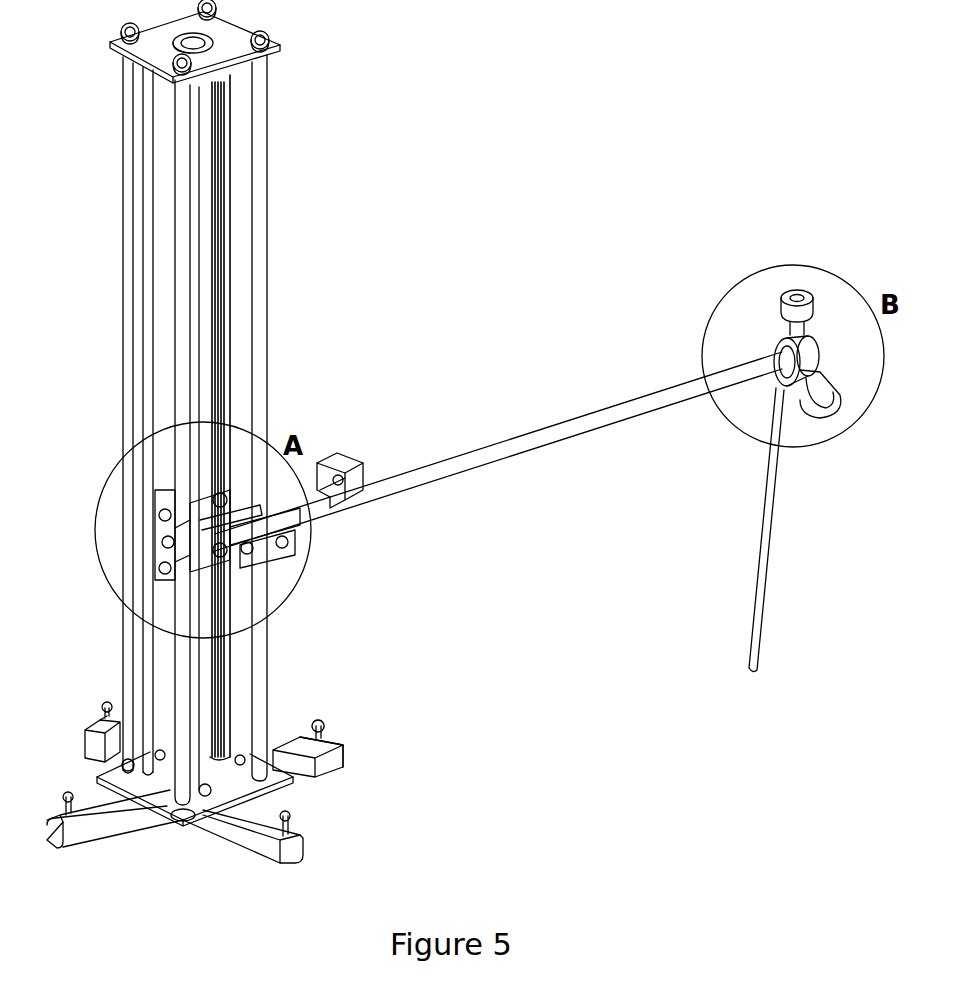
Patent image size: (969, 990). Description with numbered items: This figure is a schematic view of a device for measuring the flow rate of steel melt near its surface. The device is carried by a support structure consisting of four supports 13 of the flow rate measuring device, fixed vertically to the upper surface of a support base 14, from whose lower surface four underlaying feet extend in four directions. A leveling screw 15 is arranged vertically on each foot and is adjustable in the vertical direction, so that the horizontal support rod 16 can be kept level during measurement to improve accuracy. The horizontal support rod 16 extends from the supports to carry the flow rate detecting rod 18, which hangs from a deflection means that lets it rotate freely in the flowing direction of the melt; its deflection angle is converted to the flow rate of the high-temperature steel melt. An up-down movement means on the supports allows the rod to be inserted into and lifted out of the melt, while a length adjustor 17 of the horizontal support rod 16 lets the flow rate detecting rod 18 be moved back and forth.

The support of the flow rate measuring device 13 is at (267, 122).
The support base 14 is at (292, 782).
The leveling screw 15 is at (318, 723).
The horizontal support rod 16 is at (640, 383).
The length adjustor of the horizontal support rod 17 is at (347, 453).
The flow rate detecting rod 18 is at (752, 622).